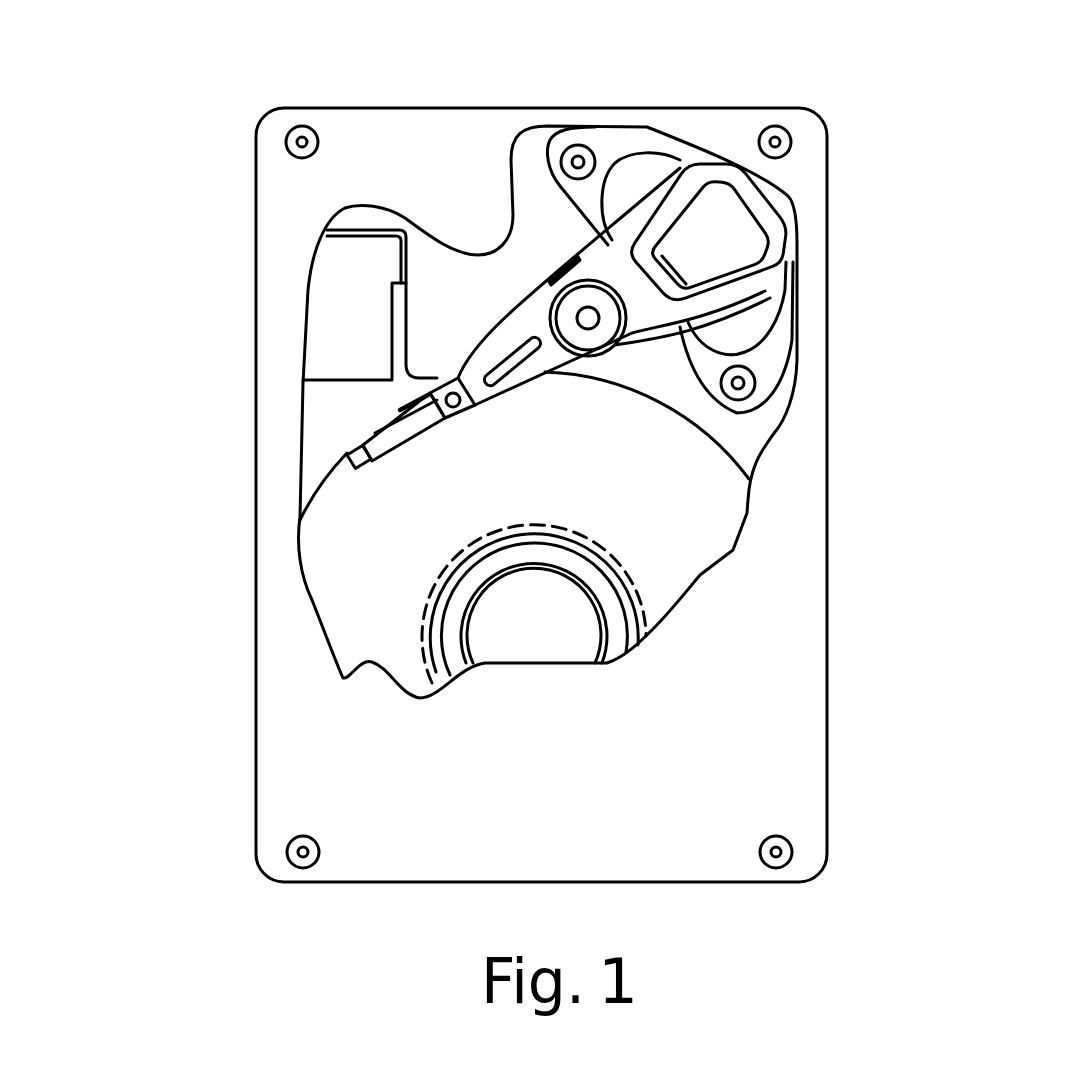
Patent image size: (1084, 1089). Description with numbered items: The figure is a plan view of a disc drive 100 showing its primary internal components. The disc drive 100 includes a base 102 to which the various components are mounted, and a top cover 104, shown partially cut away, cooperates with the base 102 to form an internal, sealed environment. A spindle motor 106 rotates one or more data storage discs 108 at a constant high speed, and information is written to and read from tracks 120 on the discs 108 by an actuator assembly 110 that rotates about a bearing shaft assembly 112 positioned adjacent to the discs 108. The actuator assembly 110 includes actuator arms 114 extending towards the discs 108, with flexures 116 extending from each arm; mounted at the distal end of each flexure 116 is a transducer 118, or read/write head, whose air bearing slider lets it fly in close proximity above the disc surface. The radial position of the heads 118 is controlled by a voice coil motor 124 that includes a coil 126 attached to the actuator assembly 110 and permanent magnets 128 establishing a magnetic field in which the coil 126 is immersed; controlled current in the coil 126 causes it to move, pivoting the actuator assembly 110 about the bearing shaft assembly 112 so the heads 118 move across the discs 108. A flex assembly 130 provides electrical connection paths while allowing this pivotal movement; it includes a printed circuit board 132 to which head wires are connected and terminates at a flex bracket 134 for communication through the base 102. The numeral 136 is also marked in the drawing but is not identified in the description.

The disc drive 100 is at (212, 85).
The base 102 is at (318, 397).
The top cover 104 is at (318, 747).
The spindle motor 106 is at (533, 630).
The data storage disc 108 is at (685, 558).
The actuator assembly 110 is at (548, 362).
The bearing shaft assembly 112 is at (588, 318).
The actuator arm 114 is at (525, 392).
The flexure 116 is at (387, 447).
The transducer 118 is at (348, 470).
The tracks 120 is at (427, 633).
The voice coil motor 124 is at (655, 99).
The coil 126 is at (777, 240).
The permanent magnet 128 is at (613, 192).
The flex assembly 130 is at (498, 323).
The printed circuit board 132 is at (550, 277).
The flex bracket 134 is at (342, 297).
The landing zone 136 is at (633, 620).